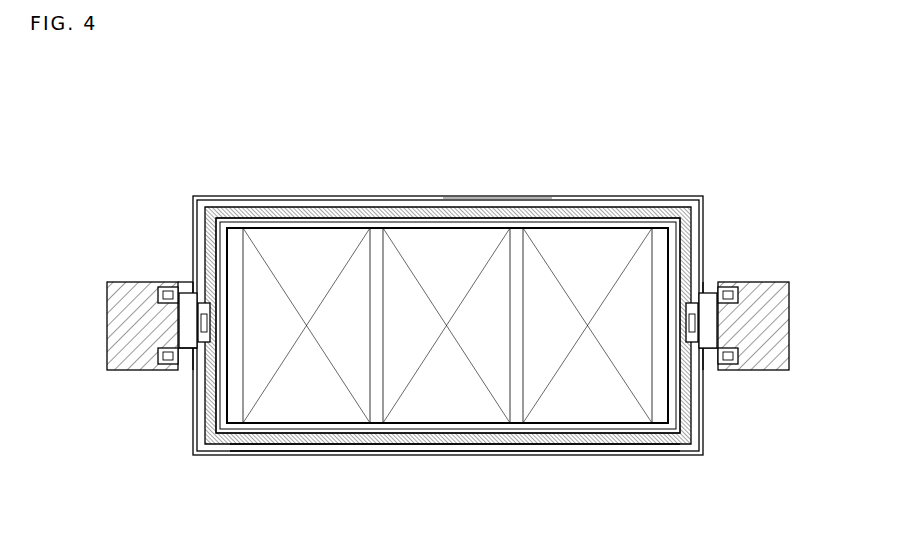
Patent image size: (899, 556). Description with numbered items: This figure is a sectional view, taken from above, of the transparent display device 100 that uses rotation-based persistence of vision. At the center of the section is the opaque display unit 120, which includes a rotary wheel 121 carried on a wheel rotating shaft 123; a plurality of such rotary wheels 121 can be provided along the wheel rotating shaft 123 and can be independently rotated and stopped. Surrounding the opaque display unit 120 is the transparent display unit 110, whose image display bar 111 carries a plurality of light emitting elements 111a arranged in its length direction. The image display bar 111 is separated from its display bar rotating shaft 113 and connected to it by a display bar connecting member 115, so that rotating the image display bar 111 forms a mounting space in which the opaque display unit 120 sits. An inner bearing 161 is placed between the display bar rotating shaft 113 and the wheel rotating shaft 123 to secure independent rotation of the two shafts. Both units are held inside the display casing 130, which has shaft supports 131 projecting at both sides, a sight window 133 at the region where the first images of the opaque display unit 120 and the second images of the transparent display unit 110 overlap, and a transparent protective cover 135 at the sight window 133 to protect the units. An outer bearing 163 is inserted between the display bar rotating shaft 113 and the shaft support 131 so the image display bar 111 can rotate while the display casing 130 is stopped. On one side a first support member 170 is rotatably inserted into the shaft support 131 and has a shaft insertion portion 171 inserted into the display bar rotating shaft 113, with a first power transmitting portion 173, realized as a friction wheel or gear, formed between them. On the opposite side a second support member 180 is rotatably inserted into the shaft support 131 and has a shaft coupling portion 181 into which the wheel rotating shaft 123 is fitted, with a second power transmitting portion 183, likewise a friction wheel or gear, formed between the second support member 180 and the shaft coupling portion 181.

The transparent display device 100 is at (204, 128).
The transparent display unit 110 is at (571, 191).
The image display bar 111 is at (318, 207).
The light emitting elements 111a is at (552, 196).
The display bar rotating shaft 113 is at (179, 286).
The display bar connecting member 115 is at (181, 281).
The opaque display unit 120 is at (395, 370).
The rotary wheel 121 is at (192, 398).
The wheel rotating shaft 123 is at (188, 350).
The display casing 130 is at (627, 195).
The shaft support 131 is at (157, 282).
The sight window 133 is at (653, 456).
The protective cover 135 is at (397, 456).
The inner bearing 161 is at (243, 222).
The outer bearing 163 is at (176, 292).
The first support member 170 is at (107, 323).
The shaft insertion portion 171 is at (150, 372).
The first power transmitting portion 173 is at (141, 372).
The second support member 180 is at (790, 322).
The shaft coupling portion 181 is at (722, 285).
The second power transmitting portion 183 is at (722, 372).